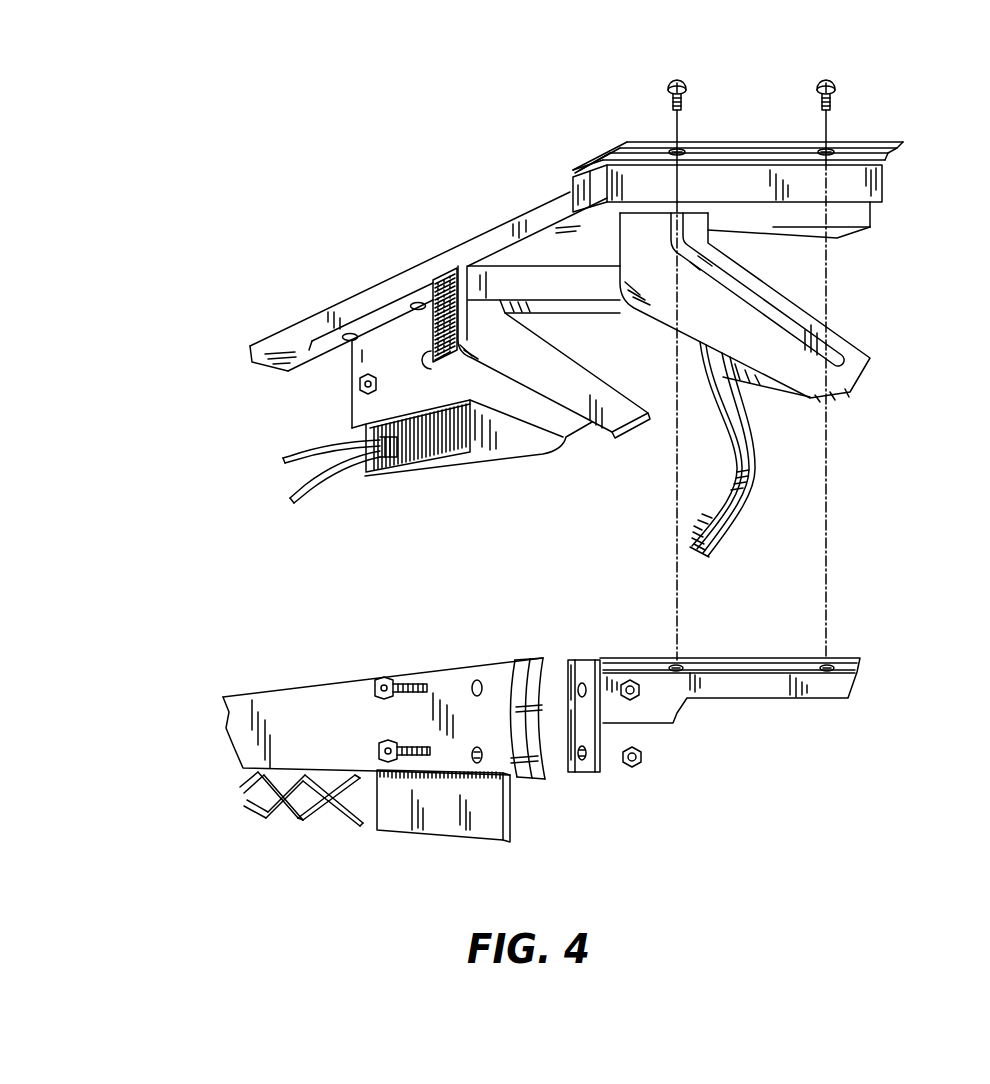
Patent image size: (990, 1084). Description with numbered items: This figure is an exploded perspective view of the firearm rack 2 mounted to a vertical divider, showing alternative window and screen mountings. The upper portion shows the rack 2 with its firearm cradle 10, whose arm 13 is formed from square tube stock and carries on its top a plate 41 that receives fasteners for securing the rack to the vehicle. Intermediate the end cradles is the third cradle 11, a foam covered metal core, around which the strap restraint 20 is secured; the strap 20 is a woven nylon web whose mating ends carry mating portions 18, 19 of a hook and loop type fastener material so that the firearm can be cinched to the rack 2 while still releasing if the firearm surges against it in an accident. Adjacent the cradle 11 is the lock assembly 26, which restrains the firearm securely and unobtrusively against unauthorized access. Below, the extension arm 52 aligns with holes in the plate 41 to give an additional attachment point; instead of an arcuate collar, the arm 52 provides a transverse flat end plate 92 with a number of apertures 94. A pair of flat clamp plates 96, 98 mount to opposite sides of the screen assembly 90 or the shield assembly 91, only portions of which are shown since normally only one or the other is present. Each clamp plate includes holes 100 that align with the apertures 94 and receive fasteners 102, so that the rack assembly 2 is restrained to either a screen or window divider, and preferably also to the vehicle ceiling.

The rack 2 is at (232, 233).
The firearm cradle 10 is at (857, 390).
The third cradle 11 is at (633, 440).
The arm 13 is at (866, 193).
The mating portion of fastener material 18 is at (432, 290).
The mating portion of fastener material 19 is at (693, 528).
The strap restraint 20 is at (757, 488).
The lock assembly 26 is at (450, 468).
The plate 41 is at (903, 143).
The extension arm 52 is at (833, 698).
The screen assembly 90 is at (268, 812).
The shield assembly 91 is at (460, 840).
The end plate 92 is at (590, 774).
The apertures 94 is at (578, 758).
The clamp plate 96 is at (520, 660).
The clamp plate 98 is at (548, 658).
The holes 100 is at (476, 681).
The fasteners 102 is at (377, 681).